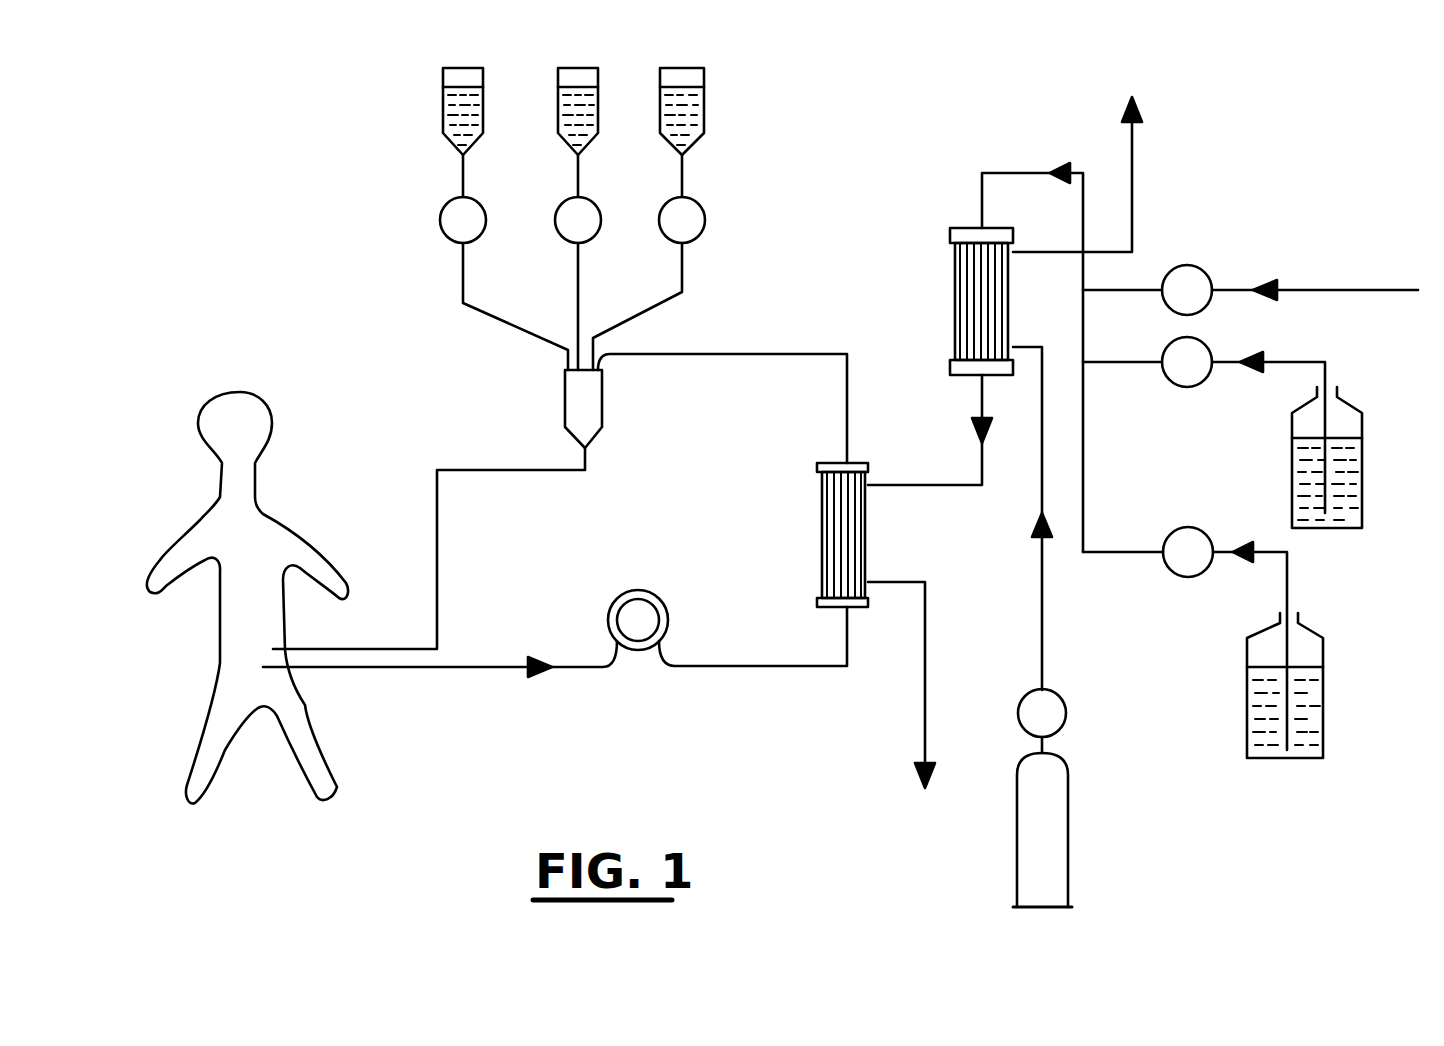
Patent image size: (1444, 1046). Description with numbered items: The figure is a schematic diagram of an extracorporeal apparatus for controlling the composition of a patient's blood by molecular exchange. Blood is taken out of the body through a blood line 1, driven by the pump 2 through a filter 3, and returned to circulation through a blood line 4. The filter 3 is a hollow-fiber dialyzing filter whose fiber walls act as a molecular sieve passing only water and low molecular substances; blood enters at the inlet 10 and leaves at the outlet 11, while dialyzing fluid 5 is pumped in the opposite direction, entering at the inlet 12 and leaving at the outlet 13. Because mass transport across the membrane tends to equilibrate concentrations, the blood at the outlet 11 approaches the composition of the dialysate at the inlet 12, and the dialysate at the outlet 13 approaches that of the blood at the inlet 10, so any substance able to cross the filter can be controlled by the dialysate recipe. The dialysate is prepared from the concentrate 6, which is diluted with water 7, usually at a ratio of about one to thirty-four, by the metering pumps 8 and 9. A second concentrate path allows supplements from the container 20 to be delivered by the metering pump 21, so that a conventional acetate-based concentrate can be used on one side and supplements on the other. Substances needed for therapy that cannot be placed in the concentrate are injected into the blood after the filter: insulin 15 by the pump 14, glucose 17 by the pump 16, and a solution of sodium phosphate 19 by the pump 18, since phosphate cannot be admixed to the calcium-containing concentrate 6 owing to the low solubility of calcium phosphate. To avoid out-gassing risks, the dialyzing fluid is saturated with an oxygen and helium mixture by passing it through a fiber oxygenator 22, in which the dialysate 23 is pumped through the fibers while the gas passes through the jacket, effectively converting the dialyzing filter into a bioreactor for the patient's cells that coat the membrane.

The blood line 1 is at (476, 667).
The pump 2 is at (632, 625).
The filter 3 is at (817, 543).
The blood line 4 is at (437, 570).
The dialyzing fluid 5 is at (1018, 173).
The concentrate 6 is at (1362, 505).
The water 7 is at (1315, 262).
The metering pump 8 is at (1172, 385).
The metering pump 9 is at (1187, 265).
The inlet 10 is at (840, 620).
The outlet 11 is at (847, 432).
The inlet 12 is at (888, 483).
The outlet 13 is at (882, 583).
The pump 14 is at (672, 240).
The insulin 15 is at (700, 130).
The pump 16 is at (562, 240).
The glucose 17 is at (557, 143).
The pump 18 is at (447, 240).
The solution of sodium phosphate 19 is at (443, 143).
The container 20 is at (1305, 717).
The metering pump 21 is at (1172, 570).
The fiber oxygenator 22 is at (950, 290).
The dialysate 23 is at (1052, 845).